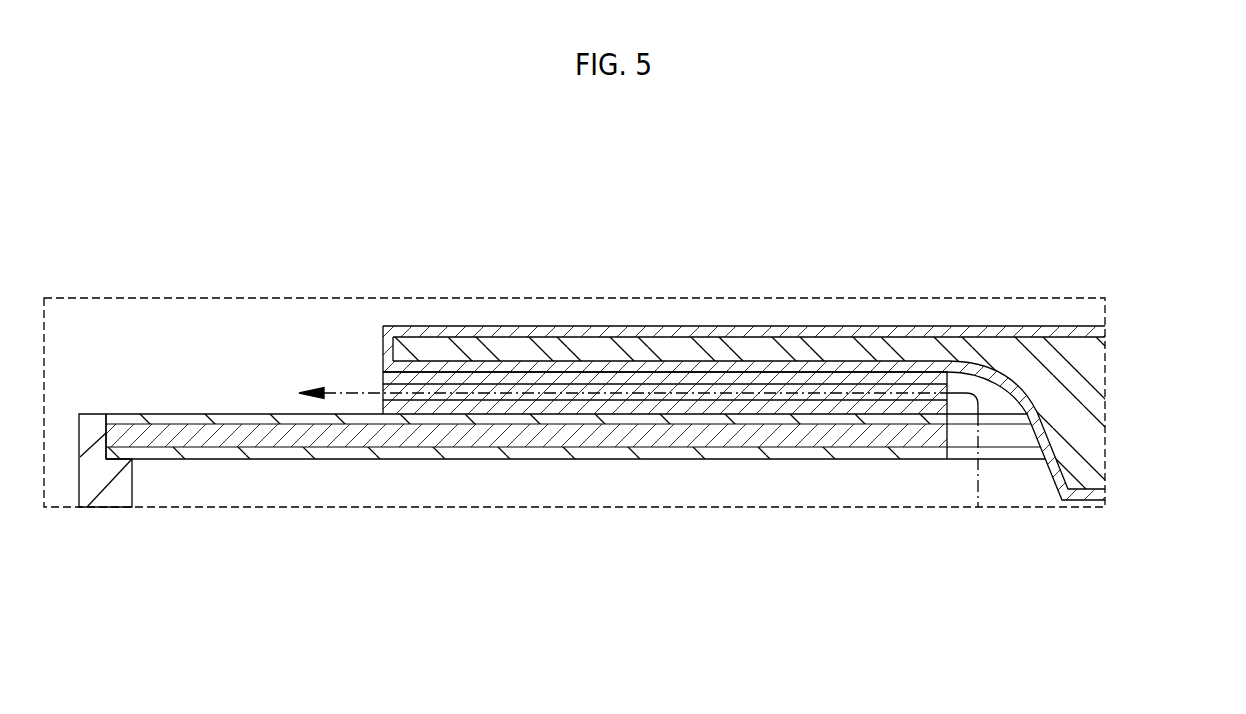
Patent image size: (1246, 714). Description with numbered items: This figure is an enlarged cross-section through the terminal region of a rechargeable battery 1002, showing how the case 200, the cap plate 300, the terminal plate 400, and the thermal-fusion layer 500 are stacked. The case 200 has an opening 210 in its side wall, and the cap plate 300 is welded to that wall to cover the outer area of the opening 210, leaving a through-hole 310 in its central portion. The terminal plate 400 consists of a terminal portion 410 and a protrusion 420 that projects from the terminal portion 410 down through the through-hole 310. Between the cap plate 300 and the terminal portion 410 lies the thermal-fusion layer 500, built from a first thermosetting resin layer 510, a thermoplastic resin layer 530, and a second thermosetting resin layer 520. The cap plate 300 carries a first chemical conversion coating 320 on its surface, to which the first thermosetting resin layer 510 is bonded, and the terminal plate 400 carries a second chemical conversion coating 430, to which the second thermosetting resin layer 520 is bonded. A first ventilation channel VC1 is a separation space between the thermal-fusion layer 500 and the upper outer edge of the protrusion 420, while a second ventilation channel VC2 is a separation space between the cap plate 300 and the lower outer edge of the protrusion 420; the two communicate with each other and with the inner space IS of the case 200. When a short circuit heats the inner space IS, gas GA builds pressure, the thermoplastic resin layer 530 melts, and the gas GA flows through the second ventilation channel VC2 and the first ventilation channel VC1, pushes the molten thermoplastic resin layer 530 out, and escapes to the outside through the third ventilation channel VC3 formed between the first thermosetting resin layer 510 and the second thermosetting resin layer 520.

The rechargeable battery 1002 is at (668, 152).
The case 200 is at (106, 520).
The opening 210 is at (234, 436).
The cap plate 300 is at (575, 498).
The through-hole 310 is at (1020, 437).
The first chemical conversion coating 320 is at (448, 418).
The terminal plate 400 is at (788, 372).
The terminal portion 410 is at (833, 347).
The protrusion 420 is at (1092, 433).
The second chemical conversion coating 430 is at (760, 365).
The thermal-fusion layer 500 is at (665, 301).
The first thermosetting resin layer 510 is at (653, 233).
The second thermosetting resin layer 520 is at (560, 377).
The thermoplastic resin layer 530 is at (640, 390).
The gas GA is at (343, 393).
The inner space IS is at (672, 486).
The first ventilation channel VC1 is at (963, 380).
The second ventilation channel VC2 is at (993, 440).
The third ventilation channel VC3 is at (792, 397).